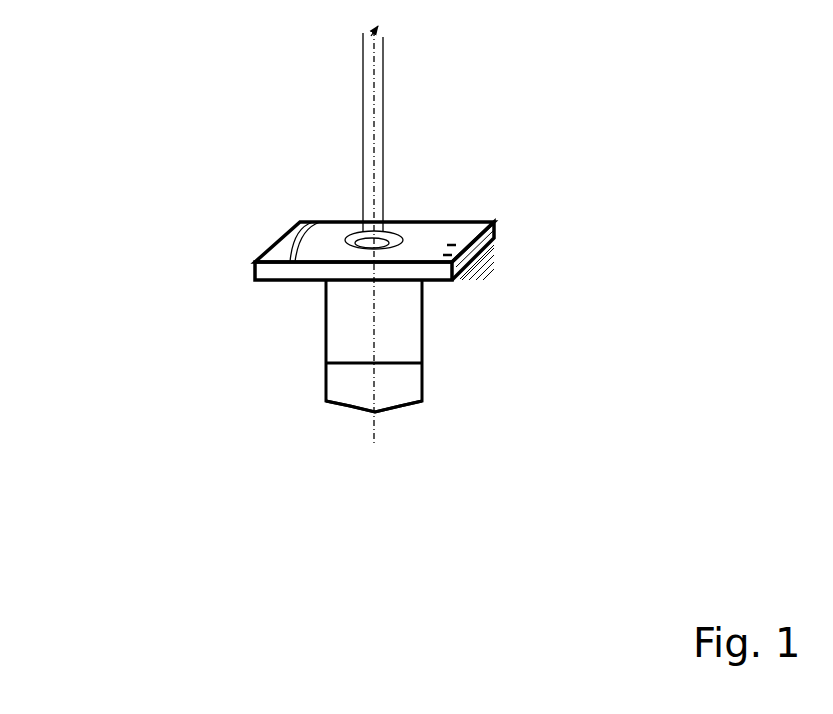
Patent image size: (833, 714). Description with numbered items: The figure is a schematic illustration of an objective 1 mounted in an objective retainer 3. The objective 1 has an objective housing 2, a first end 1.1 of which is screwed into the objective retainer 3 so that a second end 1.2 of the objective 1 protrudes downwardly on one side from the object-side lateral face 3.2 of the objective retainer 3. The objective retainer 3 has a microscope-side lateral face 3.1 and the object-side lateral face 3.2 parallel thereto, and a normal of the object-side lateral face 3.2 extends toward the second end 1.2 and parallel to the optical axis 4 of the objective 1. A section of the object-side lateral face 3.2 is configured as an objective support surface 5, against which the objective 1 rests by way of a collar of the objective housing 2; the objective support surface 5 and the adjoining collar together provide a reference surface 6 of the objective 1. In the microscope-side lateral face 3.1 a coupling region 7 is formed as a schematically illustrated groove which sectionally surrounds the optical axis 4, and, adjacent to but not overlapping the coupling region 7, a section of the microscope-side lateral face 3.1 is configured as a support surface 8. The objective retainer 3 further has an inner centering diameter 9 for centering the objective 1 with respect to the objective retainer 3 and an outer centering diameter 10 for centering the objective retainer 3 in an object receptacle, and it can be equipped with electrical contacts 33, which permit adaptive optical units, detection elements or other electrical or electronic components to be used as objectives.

The objective 1 is at (428, 383).
The first end 1.1 is at (389, 232).
The second end 1.2 is at (321, 406).
The objective housing 2 is at (408, 333).
The objective retainer 3 is at (428, 227).
The microscope-side lateral face 3.1 is at (452, 231).
The object-side lateral face 3.2 is at (462, 273).
The optical axis 4 is at (375, 447).
The objective support surface 5 is at (323, 285).
The reference surface 6 is at (353, 227).
The coupling region 7 is at (303, 220).
The support surface 8 is at (452, 231).
The inner centering diameter 9 is at (379, 34).
The outer centering diameter 10 is at (250, 270).
The electrical contacts 33 is at (460, 257).